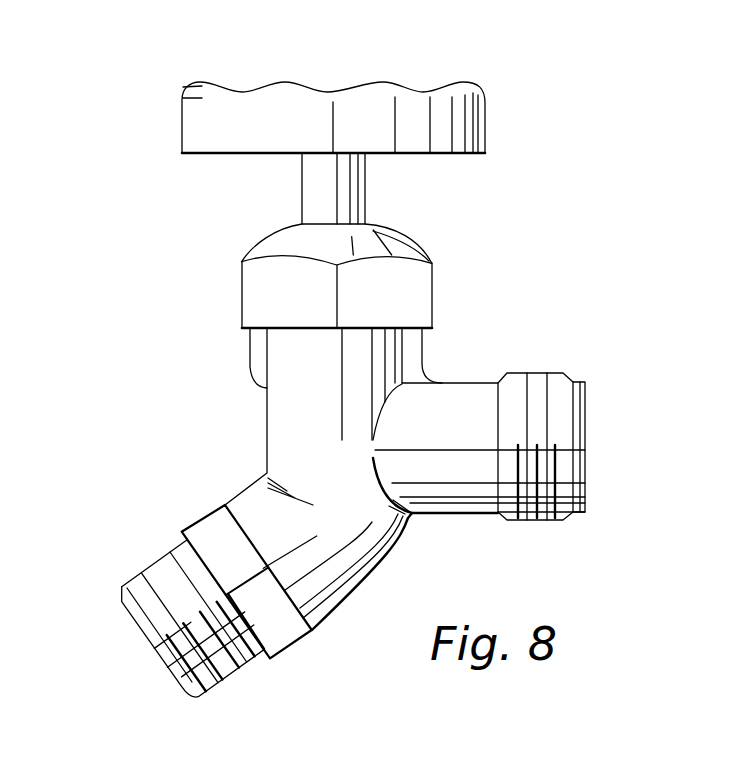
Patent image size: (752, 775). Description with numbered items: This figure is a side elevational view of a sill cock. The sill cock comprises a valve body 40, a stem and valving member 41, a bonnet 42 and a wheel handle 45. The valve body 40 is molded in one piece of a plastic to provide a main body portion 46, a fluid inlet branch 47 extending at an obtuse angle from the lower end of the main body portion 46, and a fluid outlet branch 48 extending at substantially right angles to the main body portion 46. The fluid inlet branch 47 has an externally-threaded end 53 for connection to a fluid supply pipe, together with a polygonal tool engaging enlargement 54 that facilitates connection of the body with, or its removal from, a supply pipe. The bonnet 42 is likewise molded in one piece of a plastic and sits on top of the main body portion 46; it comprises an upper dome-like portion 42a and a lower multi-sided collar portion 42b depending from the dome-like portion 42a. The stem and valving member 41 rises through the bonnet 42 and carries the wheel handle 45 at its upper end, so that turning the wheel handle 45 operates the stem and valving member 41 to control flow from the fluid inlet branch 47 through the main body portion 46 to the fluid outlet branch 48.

The valve body 40 is at (346, 507).
The stem and valving member 41 is at (372, 197).
The bonnet 42 is at (356, 255).
The upper dome-like portion 42a is at (278, 242).
The lower multi-sided collar portion 42b is at (433, 295).
The wheel handle 45 is at (467, 82).
The main body portion 46 is at (267, 405).
The fluid inlet branch 47 is at (332, 605).
The fluid outlet branch 48 is at (475, 383).
The externally-threaded end 53 is at (149, 568).
The polygonal tool engaging enlargement 54 is at (200, 520).